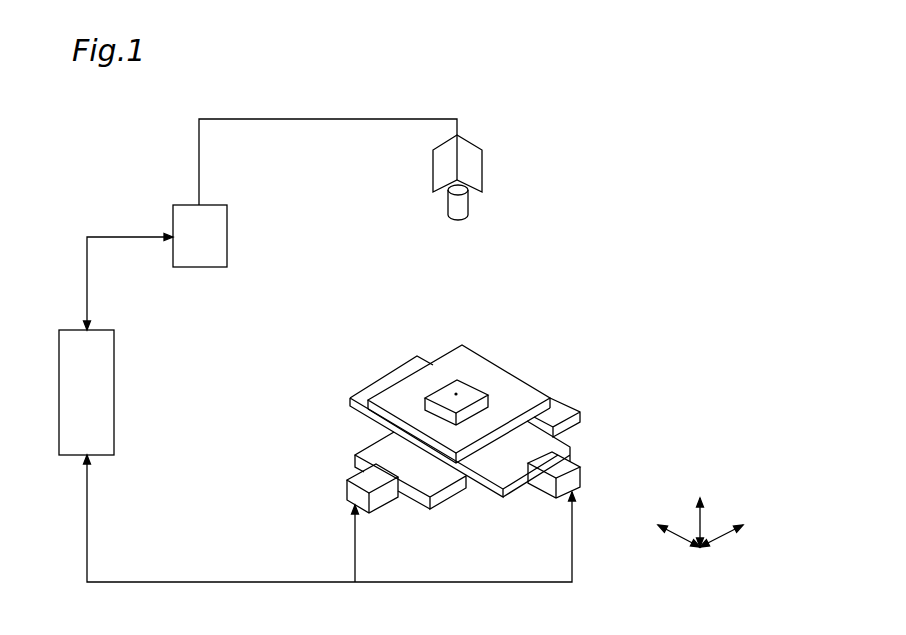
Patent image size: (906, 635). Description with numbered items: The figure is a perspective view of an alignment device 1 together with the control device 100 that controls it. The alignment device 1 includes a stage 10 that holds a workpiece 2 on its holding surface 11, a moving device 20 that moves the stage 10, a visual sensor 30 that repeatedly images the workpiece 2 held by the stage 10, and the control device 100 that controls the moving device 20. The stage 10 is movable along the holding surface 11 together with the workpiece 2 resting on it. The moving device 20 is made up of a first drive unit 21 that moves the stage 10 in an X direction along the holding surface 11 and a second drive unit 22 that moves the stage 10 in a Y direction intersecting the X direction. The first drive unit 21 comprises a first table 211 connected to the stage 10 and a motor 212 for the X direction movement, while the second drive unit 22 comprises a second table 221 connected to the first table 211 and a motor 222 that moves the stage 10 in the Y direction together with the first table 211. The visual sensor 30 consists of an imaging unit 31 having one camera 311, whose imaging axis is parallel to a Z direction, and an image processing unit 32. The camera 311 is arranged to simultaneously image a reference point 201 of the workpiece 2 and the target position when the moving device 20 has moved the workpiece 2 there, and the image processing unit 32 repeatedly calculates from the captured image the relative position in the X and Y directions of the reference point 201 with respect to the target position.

The alignment device 1 is at (593, 323).
The workpiece 2 is at (478, 383).
The stage 10 is at (557, 395).
The holding surface 11 is at (522, 395).
The moving device 20 is at (355, 384).
The reference point 201 is at (463, 377).
The first drive unit 21 is at (663, 447).
The first table 211 is at (573, 437).
The motor 212 is at (598, 460).
The second drive unit 22 is at (486, 537).
The second table 221 is at (441, 480).
The motor 222 is at (381, 496).
The visual sensor 30 is at (218, 197).
The imaging unit 31 is at (417, 173).
The camera 311 is at (482, 167).
The image processing unit 32 is at (171, 258).
The control device 100 is at (114, 392).